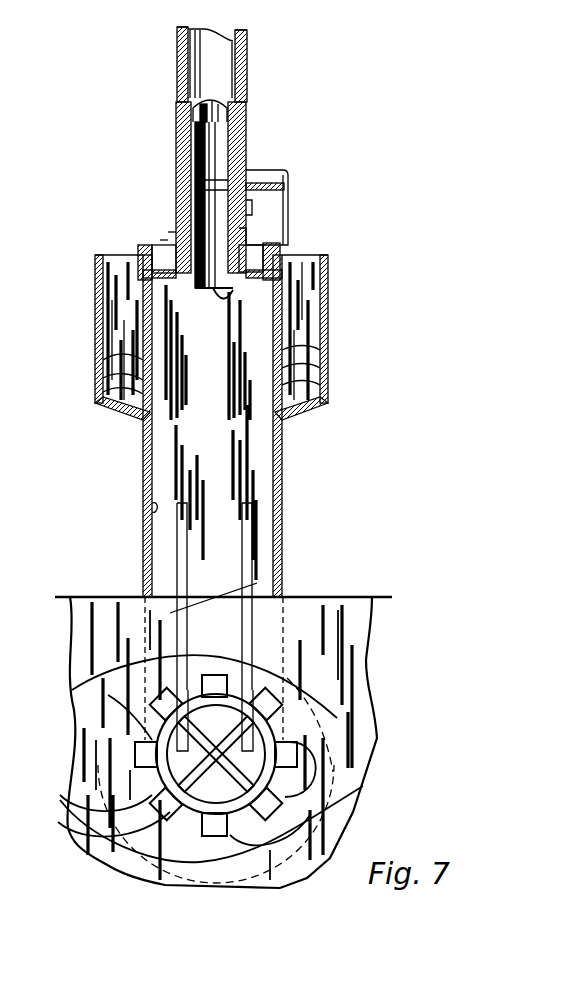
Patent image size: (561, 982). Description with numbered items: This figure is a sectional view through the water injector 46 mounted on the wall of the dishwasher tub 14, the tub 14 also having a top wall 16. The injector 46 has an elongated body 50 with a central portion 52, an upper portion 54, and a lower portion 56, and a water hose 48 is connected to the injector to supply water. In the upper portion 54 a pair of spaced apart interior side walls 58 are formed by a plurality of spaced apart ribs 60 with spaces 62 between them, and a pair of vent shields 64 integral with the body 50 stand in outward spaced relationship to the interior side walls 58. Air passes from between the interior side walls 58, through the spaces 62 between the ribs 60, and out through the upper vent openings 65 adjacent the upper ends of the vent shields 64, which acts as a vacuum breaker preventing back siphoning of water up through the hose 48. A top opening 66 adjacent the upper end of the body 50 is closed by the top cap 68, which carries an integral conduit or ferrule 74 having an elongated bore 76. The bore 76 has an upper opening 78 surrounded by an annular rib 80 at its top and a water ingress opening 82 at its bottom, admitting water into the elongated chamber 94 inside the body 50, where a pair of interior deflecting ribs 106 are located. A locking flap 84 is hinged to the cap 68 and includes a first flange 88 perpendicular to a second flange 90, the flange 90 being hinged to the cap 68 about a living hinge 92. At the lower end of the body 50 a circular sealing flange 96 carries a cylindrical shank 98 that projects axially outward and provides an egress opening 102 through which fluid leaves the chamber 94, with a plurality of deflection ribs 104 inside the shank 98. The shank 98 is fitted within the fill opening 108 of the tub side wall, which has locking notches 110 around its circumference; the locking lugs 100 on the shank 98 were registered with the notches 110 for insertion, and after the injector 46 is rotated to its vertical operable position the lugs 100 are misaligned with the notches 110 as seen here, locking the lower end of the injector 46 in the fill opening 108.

The tub 14 is at (366, 657).
The top wall 16 is at (360, 675).
The water injector 46 is at (92, 318).
The water hose 48 is at (179, 60).
The elongated body 50 is at (143, 470).
The central portion 52 is at (175, 490).
The upper portion 54 is at (105, 345).
The lower portion 56 is at (160, 640).
The interior side walls 58 is at (150, 248).
The ribs 60 is at (110, 366).
The spaces 62 is at (103, 385).
The vent shields 64 is at (97, 300).
The upper vent openings 65 is at (117, 252).
The top opening 66 is at (166, 245).
The top cap 68 is at (174, 240).
The conduit or ferrule 74 is at (178, 130).
The elongated bore 76 is at (190, 108).
The upper opening 78 is at (183, 88).
The annular rib 80 is at (228, 118).
The water ingress opening 82 is at (233, 298).
The locking flap 84 is at (291, 163).
The first flange 88 is at (258, 180).
The second flange 90 is at (288, 205).
The living hinge 92 is at (270, 242).
The elongated chamber 94 is at (155, 505).
The circular sealing flange 96 is at (100, 756).
The cylindrical shank 98 is at (143, 772).
The locking lugs 100 is at (362, 786).
The egress opening 102 is at (308, 728).
The deflection ribs 104 is at (95, 800).
The interior deflecting ribs 106 is at (230, 526).
The fill opening 108 is at (140, 740).
The locking notches 110 is at (337, 712).